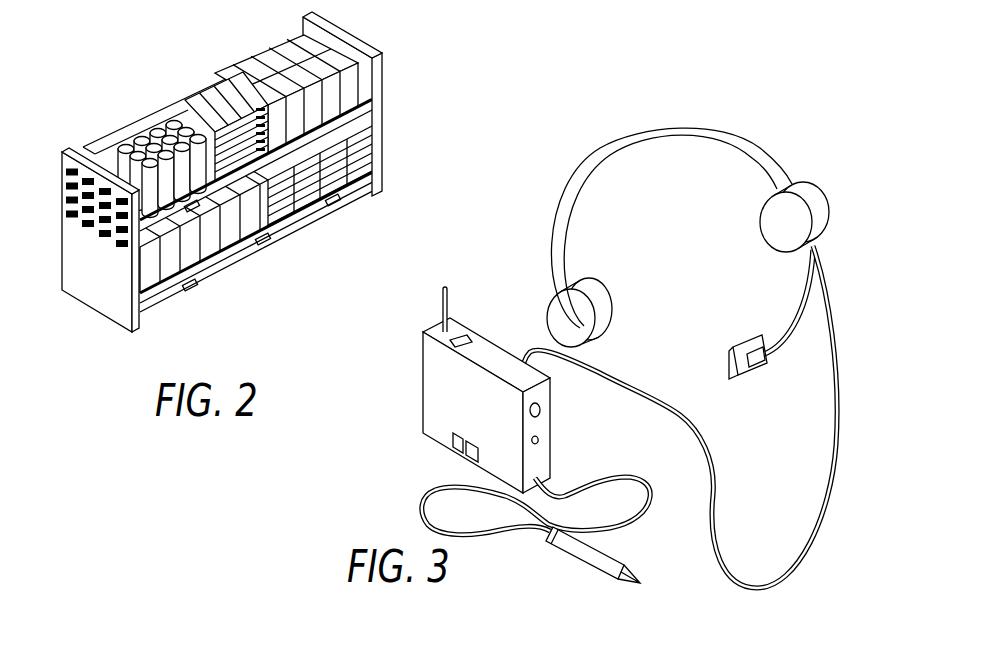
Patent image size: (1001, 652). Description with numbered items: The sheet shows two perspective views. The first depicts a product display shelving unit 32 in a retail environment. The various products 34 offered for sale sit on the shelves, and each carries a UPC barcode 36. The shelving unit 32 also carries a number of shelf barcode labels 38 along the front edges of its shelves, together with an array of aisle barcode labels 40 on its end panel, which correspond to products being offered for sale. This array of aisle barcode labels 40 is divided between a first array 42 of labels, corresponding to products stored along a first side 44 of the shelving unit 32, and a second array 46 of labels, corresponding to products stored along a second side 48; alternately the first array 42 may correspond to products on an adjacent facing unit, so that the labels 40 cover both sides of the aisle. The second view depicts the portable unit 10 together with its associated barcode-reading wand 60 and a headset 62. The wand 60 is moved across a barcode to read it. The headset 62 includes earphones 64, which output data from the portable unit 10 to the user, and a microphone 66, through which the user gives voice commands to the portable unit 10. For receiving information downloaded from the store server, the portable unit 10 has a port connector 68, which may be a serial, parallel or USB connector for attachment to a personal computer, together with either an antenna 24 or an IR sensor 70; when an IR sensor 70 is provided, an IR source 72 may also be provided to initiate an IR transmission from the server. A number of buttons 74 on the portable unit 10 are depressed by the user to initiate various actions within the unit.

In FIG. 3, the portable unit 10 is at (490, 375).
In FIG. 3, the antenna 24 is at (450, 313).
In FIG. 2, the product display shelving unit 32 is at (205, 198).
In FIG. 2, the products 34 is at (220, 110).
In FIG. 2, the UPC barcode 36 is at (314, 207).
In FIG. 2, the shelf barcode labels 38 is at (270, 243).
In FIG. 2, the aisle barcode labels 40 is at (78, 240).
In FIG. 2, the first array 42 is at (111, 254).
In FIG. 2, the first side 44 is at (200, 303).
In FIG. 2, the second array 46 is at (76, 237).
In FIG. 2, the second side 48 is at (258, 42).
In FIG. 3, the barcode-reading wand 60 is at (577, 565).
In FIG. 3, the headset 62 is at (636, 137).
In FIG. 3, the earphones 64 is at (607, 302).
In FIG. 3, the microphone 66 is at (752, 370).
In FIG. 3, the port connector 68 is at (469, 337).
In FIG. 3, the IR sensor 70 is at (542, 412).
In FIG. 3, the IR source 72 is at (542, 442).
In FIG. 3, the buttons 74 is at (460, 456).